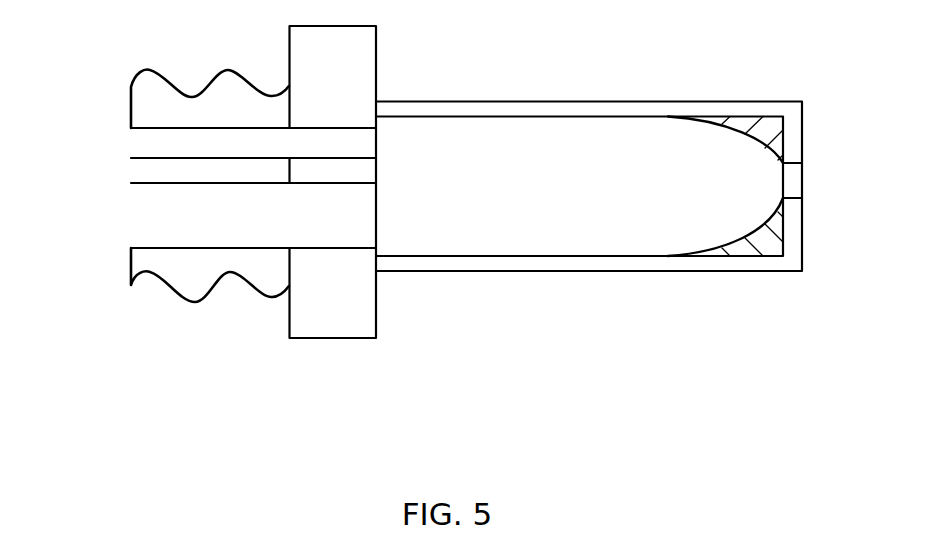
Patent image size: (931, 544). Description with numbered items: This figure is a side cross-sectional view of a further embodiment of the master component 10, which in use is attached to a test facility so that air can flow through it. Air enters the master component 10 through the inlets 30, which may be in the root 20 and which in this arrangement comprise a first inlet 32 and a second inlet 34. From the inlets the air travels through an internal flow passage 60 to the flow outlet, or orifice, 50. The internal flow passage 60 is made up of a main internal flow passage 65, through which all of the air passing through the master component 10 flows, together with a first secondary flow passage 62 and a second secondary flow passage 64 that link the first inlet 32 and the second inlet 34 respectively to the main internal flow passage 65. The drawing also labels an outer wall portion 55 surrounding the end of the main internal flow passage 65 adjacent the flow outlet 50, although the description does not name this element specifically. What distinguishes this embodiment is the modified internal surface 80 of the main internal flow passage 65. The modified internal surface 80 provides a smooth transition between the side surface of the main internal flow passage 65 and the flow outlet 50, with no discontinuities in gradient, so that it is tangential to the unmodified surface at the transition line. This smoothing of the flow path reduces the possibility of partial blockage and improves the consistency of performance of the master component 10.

The master component 10 is at (681, 335).
The root 20 is at (232, 85).
The inlets 30 is at (74, 152).
The first inlet 32 is at (143, 140).
The second inlet 34 is at (143, 223).
The flow outlet 50 is at (792, 182).
The outer sleeve 55 is at (795, 142).
The internal flow passage 60 is at (260, 423).
The first secondary flow passage 62 is at (264, 143).
The second secondary flow passage 64 is at (223, 227).
The main internal flow passage 65 is at (438, 243).
The modified internal surface 80 is at (765, 250).